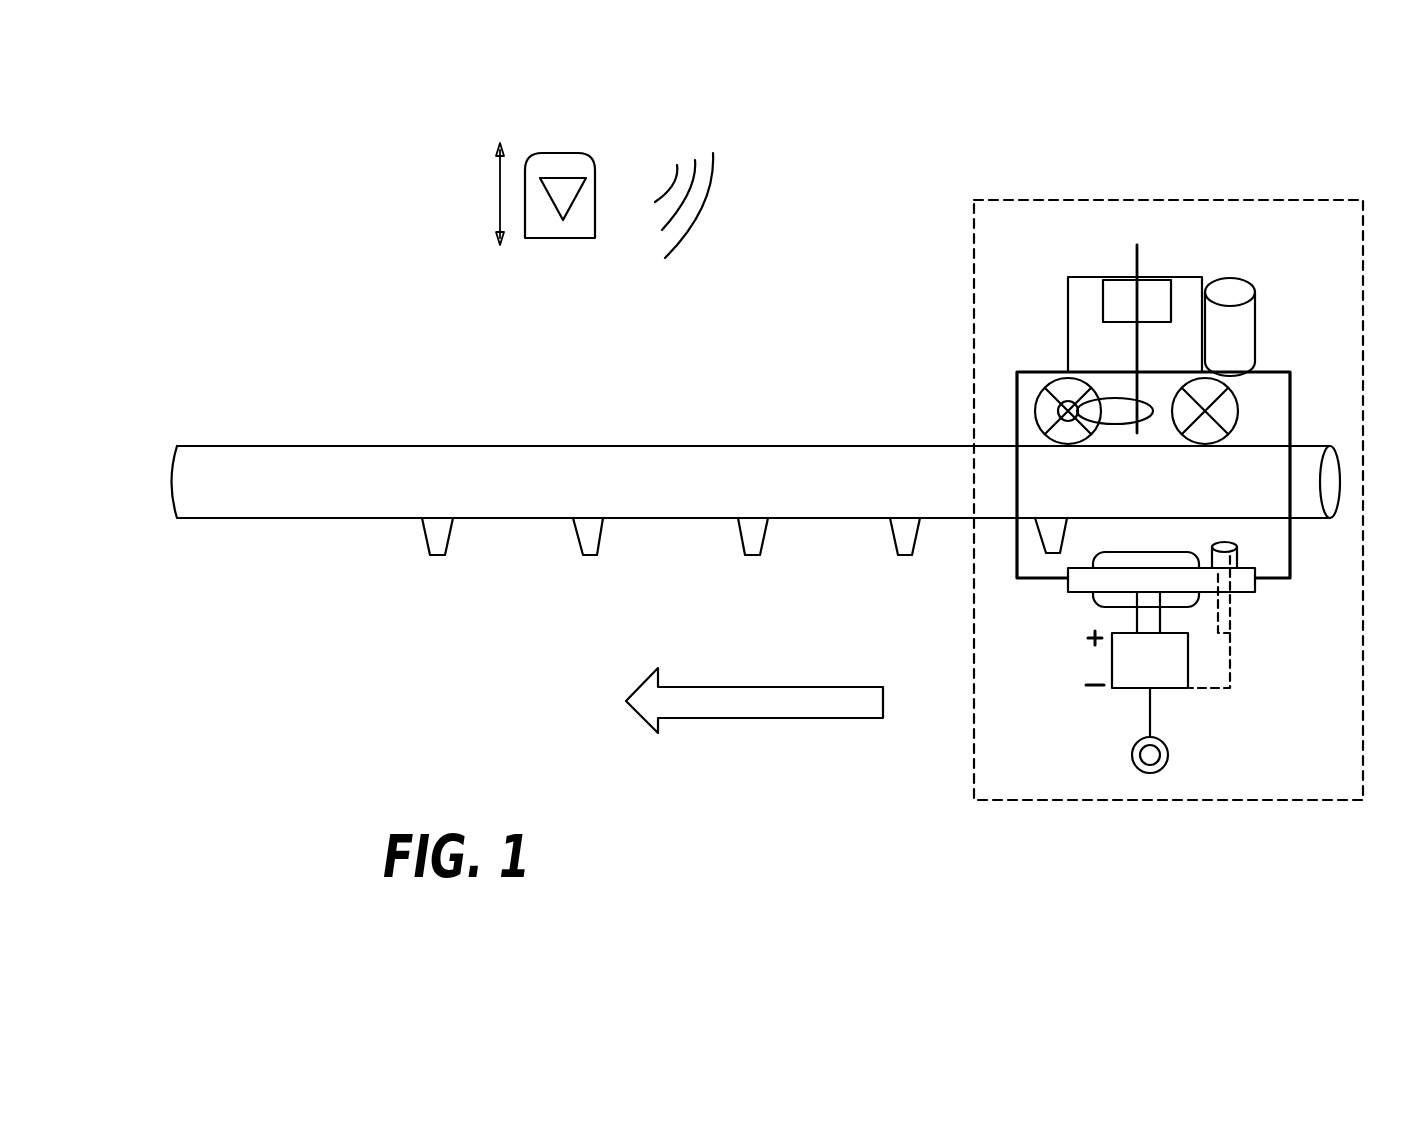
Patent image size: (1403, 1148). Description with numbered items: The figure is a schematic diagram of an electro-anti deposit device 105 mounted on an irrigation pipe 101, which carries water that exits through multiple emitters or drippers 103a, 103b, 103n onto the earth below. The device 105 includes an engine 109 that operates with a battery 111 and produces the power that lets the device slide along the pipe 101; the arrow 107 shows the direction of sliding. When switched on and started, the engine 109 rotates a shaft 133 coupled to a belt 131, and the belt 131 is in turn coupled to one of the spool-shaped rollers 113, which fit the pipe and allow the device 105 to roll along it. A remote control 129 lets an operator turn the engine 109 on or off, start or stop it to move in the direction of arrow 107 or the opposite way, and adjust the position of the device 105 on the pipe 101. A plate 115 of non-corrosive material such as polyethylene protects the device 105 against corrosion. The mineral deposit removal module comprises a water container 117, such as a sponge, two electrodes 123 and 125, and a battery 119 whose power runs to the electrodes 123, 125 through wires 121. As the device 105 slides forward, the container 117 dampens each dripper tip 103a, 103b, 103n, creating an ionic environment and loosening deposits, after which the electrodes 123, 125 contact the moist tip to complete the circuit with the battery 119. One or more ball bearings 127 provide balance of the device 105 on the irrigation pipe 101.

The irrigation pipe 101 is at (160, 470).
The dripper 103a is at (437, 557).
The dripper 103b is at (590, 560).
The dripper 103n is at (1052, 556).
The electro-anti deposit device 105 is at (972, 278).
The arrow 107 is at (762, 718).
The engine 109 is at (1115, 280).
The battery 111 is at (1255, 322).
The rollers 113 is at (1240, 413).
The plate 115 is at (1015, 485).
The water container 117 is at (1137, 552).
The battery 119 is at (1112, 660).
The wires 121 is at (1230, 648).
The electrode 123 is at (1218, 545).
The electrode 125 is at (1230, 545).
The ball bearing 127 is at (1132, 755).
The remote control 129 is at (557, 238).
The belt 131 is at (1101, 378).
The shaft 133 is at (1141, 257).